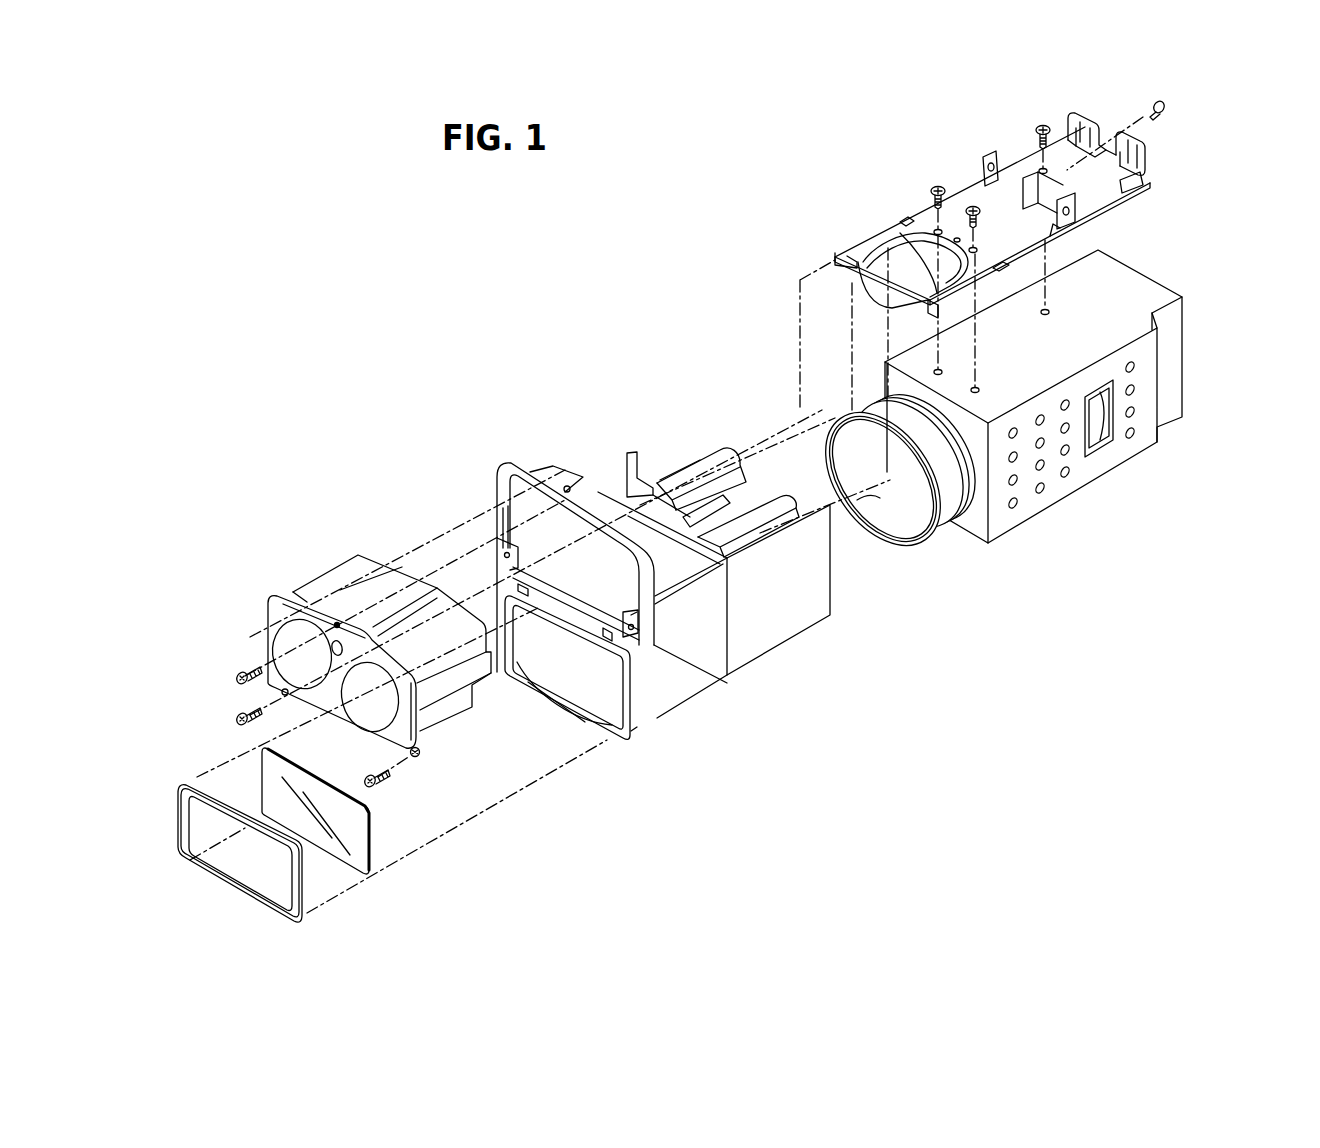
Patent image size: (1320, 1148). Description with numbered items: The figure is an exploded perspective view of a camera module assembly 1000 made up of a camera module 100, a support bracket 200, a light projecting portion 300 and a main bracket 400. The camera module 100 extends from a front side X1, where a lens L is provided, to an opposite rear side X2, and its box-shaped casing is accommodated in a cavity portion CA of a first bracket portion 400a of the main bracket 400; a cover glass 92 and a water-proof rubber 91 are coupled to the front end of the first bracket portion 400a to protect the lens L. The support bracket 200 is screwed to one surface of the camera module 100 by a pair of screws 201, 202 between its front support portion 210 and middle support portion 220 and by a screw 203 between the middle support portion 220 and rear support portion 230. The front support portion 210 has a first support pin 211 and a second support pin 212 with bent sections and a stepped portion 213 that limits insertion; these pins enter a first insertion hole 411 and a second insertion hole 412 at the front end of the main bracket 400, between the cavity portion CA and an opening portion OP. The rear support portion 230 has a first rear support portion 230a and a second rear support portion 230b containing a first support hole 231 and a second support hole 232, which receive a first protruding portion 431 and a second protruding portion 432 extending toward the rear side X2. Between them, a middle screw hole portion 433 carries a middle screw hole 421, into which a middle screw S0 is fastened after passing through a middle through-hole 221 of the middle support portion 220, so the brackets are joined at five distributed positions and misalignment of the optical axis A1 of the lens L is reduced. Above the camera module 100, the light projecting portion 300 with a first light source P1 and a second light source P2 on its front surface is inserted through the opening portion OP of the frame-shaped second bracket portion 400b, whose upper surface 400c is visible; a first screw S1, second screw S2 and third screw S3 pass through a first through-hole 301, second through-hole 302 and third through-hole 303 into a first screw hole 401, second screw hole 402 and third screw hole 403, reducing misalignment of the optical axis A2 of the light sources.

The camera module assembly 1000 is at (243, 313).
The camera module 100 is at (1077, 517).
The support bracket 200 is at (1118, 207).
The front support portion 210 is at (848, 183).
The first support pin 211 is at (845, 253).
The second support pin 212 is at (890, 243).
The stepped portion 213 is at (857, 262).
The screw 201 is at (938, 228).
The screw 202 is at (967, 246).
The screw 203 is at (1043, 168).
The middle support portion 220 is at (1022, 187).
The middle through-hole 221 is at (985, 158).
The rear support portion 230 is at (1120, 75).
The first rear support portion 230a is at (1087, 118).
The second rear support portion 230b is at (1133, 143).
The first support hole 231 is at (1072, 120).
The second support hole 232 is at (1133, 182).
The middle screw S0 is at (1149, 110).
The lens L is at (917, 520).
The front side X1 is at (898, 507).
The rear side X2 is at (1192, 319).
The optical axis A1 is at (840, 510).
The optical axis A2 is at (307, 730).
The main bracket 400 is at (757, 690).
The first bracket portion 400a is at (768, 638).
The second bracket portion 400b is at (648, 627).
The housing top face 400c is at (617, 487).
The first screw hole 401 is at (500, 555).
The second screw hole 402 is at (633, 637).
The third screw hole 403 is at (553, 470).
The first insertion hole 411 is at (522, 587).
The second insertion hole 412 is at (607, 632).
The middle screw hole 421 is at (697, 523).
The first protruding portion 431 is at (737, 477).
The second protruding portion 432 is at (783, 503).
The middle screw hole portion 433 is at (670, 490).
The opening portion OP is at (525, 492).
The cavity portion CA is at (605, 697).
The light projecting portion 300 is at (347, 528).
The first through-hole 301 is at (285, 695).
The second through-hole 302 is at (417, 757).
The third through-hole 303 is at (337, 622).
The first light source P1 is at (280, 642).
The second light source P2 is at (385, 710).
The first screw S1 is at (235, 720).
The second screw S2 is at (375, 782).
The third screw S3 is at (232, 679).
The water-proof rubber 91 is at (180, 810).
The cover glass 92 is at (262, 787).